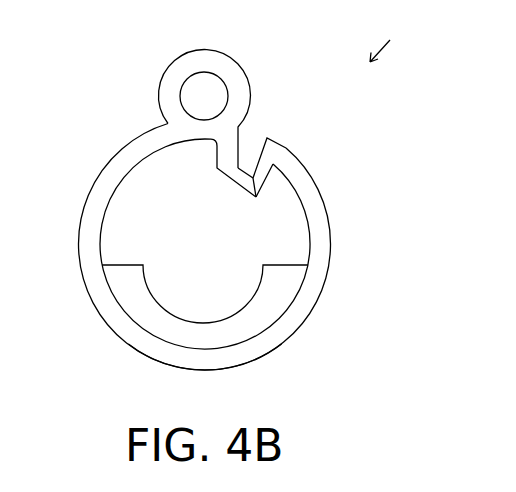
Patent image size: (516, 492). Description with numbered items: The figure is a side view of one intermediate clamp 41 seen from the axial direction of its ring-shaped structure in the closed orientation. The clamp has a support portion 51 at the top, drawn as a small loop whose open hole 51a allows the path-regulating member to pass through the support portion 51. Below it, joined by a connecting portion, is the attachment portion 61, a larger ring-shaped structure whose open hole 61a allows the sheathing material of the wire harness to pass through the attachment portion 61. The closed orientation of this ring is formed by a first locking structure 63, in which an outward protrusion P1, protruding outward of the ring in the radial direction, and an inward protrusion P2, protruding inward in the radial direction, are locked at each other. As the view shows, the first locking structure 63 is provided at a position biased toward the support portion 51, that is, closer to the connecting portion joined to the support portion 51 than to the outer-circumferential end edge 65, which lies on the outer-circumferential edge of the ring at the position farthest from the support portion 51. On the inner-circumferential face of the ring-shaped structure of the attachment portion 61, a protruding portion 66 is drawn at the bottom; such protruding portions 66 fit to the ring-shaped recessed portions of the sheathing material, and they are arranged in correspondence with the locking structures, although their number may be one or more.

The intermediate clamp 41 is at (387, 39).
The support portion 51 is at (204, 50).
The open hole 51a is at (181, 93).
The attachment portion 61 is at (331, 234).
The open hole 61a is at (104, 240).
The first locking structure 63 is at (360, 91).
The outer-circumferential end edge 65 is at (202, 370).
The protruding portion 66 is at (194, 323).
The outward protrusion P1 is at (262, 172).
The inward protrusion P2 is at (250, 167).